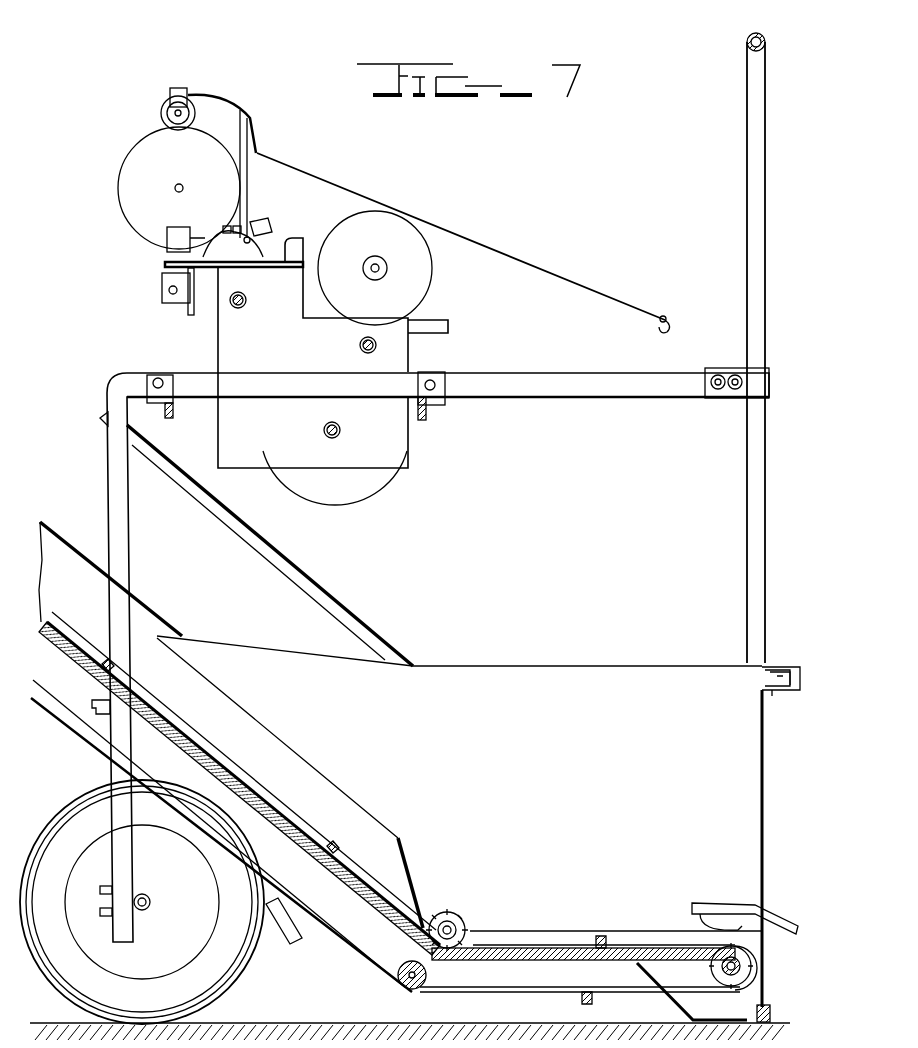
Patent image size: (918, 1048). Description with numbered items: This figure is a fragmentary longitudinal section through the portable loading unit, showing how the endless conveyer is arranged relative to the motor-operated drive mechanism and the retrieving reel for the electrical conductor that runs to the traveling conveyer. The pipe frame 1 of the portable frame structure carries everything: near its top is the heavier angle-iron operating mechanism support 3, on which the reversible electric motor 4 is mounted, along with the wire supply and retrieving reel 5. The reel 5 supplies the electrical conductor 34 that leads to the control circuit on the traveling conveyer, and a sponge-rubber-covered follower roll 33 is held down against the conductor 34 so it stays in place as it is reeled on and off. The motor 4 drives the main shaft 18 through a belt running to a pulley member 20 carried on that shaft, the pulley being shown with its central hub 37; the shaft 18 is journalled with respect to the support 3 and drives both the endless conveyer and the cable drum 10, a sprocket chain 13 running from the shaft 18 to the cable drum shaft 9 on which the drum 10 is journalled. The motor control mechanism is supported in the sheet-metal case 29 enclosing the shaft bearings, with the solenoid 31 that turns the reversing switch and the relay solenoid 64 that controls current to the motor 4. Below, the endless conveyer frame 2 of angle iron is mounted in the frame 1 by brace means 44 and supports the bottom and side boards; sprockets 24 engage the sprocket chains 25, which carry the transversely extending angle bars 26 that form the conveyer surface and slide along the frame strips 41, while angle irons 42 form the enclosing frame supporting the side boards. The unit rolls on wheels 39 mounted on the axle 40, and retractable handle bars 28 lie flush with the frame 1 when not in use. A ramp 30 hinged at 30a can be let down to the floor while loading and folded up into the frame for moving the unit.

The frame 1 is at (540, 378).
The endless conveyer frame 2 is at (232, 792).
The operating mechanism support 3 is at (430, 410).
The reversible electric motor 4 is at (400, 228).
The wire supply and retrieving reel 5 is at (150, 152).
The cable drum shaft 9 is at (322, 436).
The cable drum 10 is at (332, 504).
The sprocket chain 13 is at (165, 415).
The main shaft 18 is at (360, 348).
The bolt 20 is at (230, 308).
The sprockets 24 is at (458, 914).
The sprocket chains 25 is at (89, 638).
The transversely extending angle bars 26 is at (115, 660).
The handle bars 28 is at (772, 696).
The case 29 is at (410, 458).
The ramp 30 is at (770, 908).
The hinge 30a is at (702, 914).
The solenoid 31 is at (175, 240).
The follower roll 33 is at (162, 110).
The electrical conductor 34 is at (310, 171).
The hub 37 is at (385, 265).
The wheels 39 is at (52, 822).
The axle 40 is at (150, 912).
The frame strips 41 is at (312, 945).
The angle irons 42 is at (270, 958).
The brace means 44 is at (97, 707).
The relay solenoid 64 is at (162, 288).